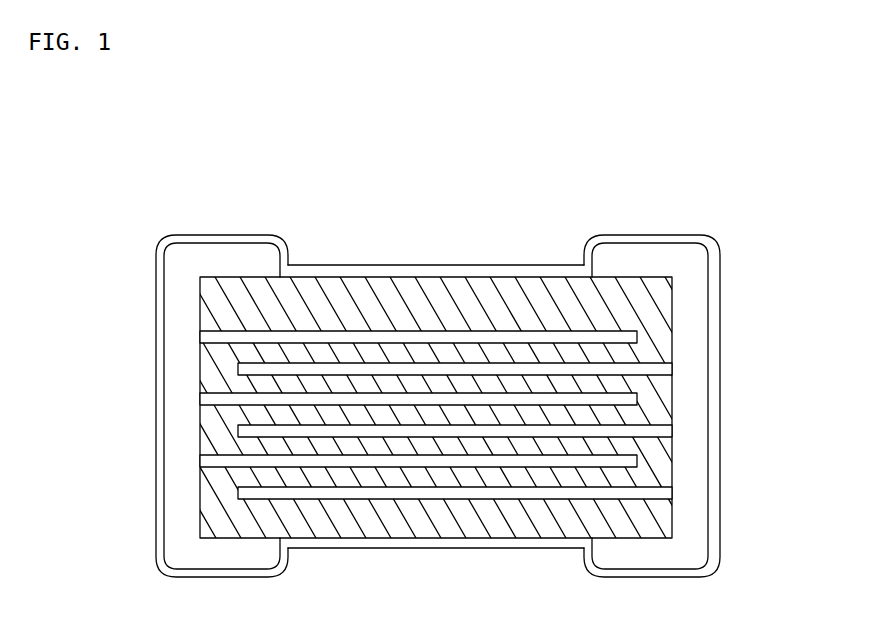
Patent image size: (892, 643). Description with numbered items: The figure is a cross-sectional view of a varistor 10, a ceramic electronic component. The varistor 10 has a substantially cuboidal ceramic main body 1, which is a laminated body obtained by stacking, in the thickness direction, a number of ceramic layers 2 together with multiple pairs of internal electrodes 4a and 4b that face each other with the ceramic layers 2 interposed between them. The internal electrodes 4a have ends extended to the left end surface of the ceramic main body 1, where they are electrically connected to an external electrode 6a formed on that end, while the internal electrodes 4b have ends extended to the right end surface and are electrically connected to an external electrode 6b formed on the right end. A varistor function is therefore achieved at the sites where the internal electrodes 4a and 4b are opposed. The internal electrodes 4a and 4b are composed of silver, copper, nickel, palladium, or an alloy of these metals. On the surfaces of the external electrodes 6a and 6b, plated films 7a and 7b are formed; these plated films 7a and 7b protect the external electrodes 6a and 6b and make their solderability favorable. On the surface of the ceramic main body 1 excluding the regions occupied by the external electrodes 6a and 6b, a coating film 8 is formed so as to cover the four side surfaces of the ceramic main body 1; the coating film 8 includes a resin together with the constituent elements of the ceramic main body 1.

The varistor 10 is at (185, 179).
The ceramic main body 1 is at (375, 290).
The ceramic layers 2 is at (250, 308).
The internal electrodes 4a is at (545, 457).
The internal electrodes 4b is at (472, 367).
The external electrode 6a is at (178, 278).
The external electrode 6b is at (693, 277).
The plated film 7a is at (163, 243).
The plated film 7b is at (707, 240).
The coating film 8 is at (425, 270).